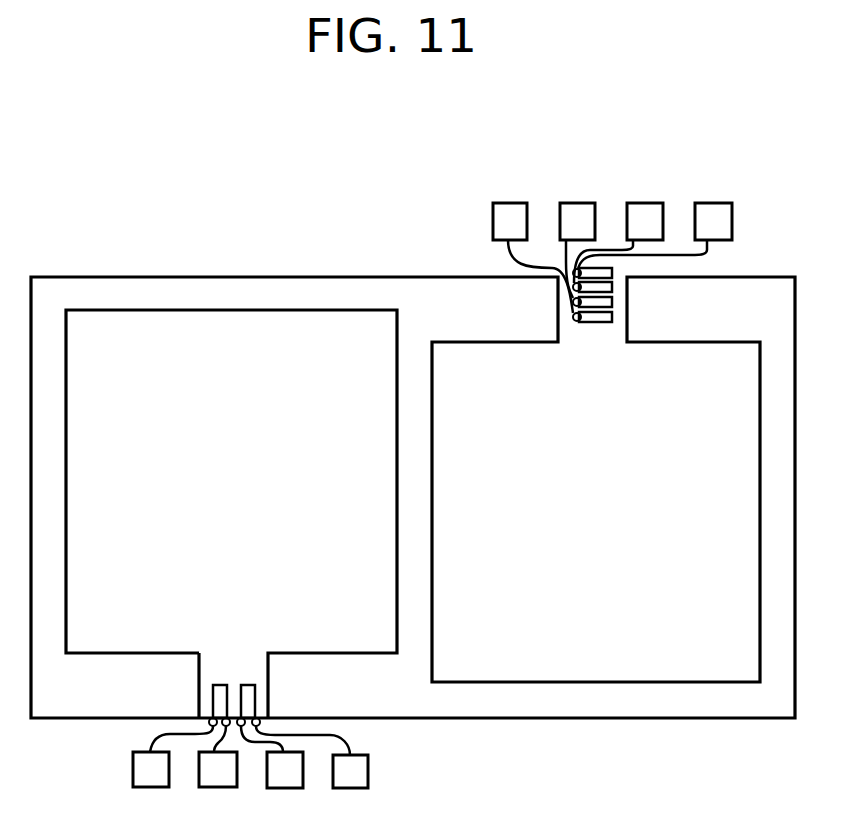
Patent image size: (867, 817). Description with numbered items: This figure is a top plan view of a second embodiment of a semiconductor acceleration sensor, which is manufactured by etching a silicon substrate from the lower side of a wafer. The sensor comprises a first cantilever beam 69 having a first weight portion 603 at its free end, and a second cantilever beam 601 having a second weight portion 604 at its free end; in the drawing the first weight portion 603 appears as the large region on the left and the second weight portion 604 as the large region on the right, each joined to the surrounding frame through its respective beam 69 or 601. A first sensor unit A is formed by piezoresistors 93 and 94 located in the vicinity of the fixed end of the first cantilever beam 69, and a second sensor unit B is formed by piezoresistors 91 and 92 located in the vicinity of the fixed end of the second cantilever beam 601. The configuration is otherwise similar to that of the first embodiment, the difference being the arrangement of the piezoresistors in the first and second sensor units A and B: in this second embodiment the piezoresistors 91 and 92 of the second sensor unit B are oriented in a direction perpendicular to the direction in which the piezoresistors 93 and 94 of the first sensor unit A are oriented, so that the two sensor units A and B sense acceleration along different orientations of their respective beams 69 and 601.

The first weight portion 603 is at (245, 488).
The second weight portion 604 is at (622, 528).
The second cantilever beam 601 is at (673, 325).
The first cantilever beam 69 is at (260, 663).
The piezoresistor 91 is at (617, 307).
The piezoresistor 92 is at (614, 268).
The piezoresistor 93 is at (247, 685).
The piezoresistor 94 is at (221, 685).
The first sensor unit A is at (298, 178).
The second sensor unit B is at (668, 178).